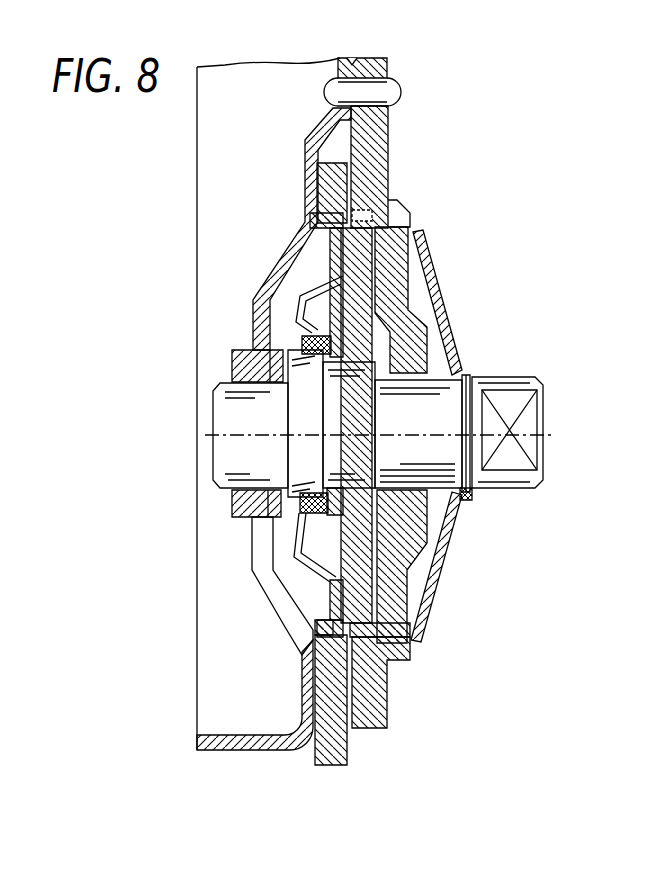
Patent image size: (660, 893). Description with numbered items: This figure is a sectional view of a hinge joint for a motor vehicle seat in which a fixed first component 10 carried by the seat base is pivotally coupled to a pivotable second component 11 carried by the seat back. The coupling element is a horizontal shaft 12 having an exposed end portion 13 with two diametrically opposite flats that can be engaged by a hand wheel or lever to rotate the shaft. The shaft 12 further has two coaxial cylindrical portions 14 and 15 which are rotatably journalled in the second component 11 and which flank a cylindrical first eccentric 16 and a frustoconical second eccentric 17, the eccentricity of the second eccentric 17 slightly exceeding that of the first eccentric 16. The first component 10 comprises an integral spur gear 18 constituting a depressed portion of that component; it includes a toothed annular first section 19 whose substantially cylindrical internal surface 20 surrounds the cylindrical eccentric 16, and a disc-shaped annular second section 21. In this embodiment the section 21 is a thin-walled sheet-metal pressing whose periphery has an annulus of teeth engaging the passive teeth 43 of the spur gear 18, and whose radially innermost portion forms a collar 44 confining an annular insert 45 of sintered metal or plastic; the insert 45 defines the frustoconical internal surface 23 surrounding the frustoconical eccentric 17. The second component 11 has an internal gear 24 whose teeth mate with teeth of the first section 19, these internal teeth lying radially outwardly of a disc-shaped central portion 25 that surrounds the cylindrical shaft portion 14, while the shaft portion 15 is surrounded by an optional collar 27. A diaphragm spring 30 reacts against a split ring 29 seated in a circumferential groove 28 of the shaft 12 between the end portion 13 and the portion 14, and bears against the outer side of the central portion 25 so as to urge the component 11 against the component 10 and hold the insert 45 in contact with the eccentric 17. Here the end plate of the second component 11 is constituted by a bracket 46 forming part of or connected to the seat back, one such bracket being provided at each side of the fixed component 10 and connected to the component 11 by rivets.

The first component 10 is at (327, 745).
The second component 11 is at (372, 125).
The shaft 12 is at (545, 410).
The exposed end portion 13 is at (520, 377).
The cylindrical portion 14 is at (418, 420).
The cylindrical portion 15 is at (264, 473).
The cylindrical first eccentric 16 is at (360, 473).
The frustoconical second eccentric 17 is at (320, 406).
The spur gear 18 is at (418, 632).
The toothed annular first section 19 is at (395, 580).
The cylindrical internal surface 20 is at (432, 553).
The disc-shaped annular second section 21 is at (338, 288).
The frustoconical internal surface 23 is at (272, 532).
The internal gear 24 is at (418, 665).
The disc-shaped central portion 25 is at (398, 268).
The collar 27 is at (238, 373).
The circumferential groove 28 is at (470, 497).
The split ring 29 is at (470, 377).
The diaphragm spring 30 is at (440, 305).
The passive teeth 43 is at (305, 211).
The collar 44 is at (268, 582).
The annular insert 45 is at (302, 338).
The bracket 46 is at (292, 545).